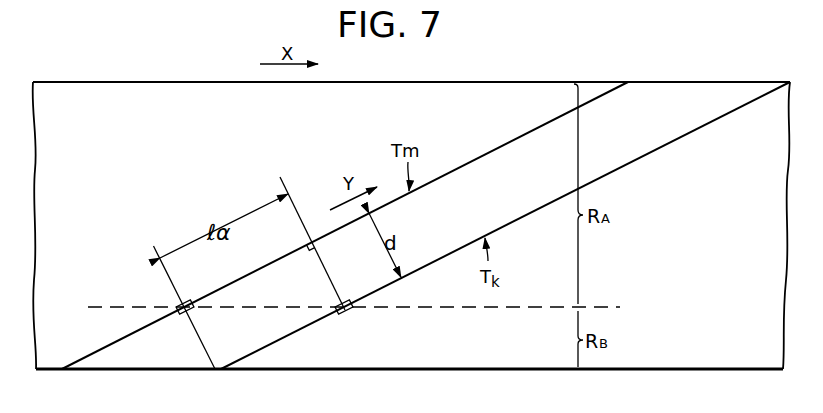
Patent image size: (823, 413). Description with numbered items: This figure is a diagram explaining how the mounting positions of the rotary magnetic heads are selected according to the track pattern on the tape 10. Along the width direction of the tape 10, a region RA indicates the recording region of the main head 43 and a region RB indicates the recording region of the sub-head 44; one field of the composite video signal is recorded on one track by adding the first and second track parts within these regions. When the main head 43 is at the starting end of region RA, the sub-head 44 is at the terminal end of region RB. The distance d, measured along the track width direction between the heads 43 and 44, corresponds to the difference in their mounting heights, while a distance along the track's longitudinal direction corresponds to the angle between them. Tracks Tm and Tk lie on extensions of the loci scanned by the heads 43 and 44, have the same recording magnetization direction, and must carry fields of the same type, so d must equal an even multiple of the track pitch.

The tape 10 is at (116, 86).
The main head 43 is at (181, 318).
The sub-head 44 is at (352, 316).